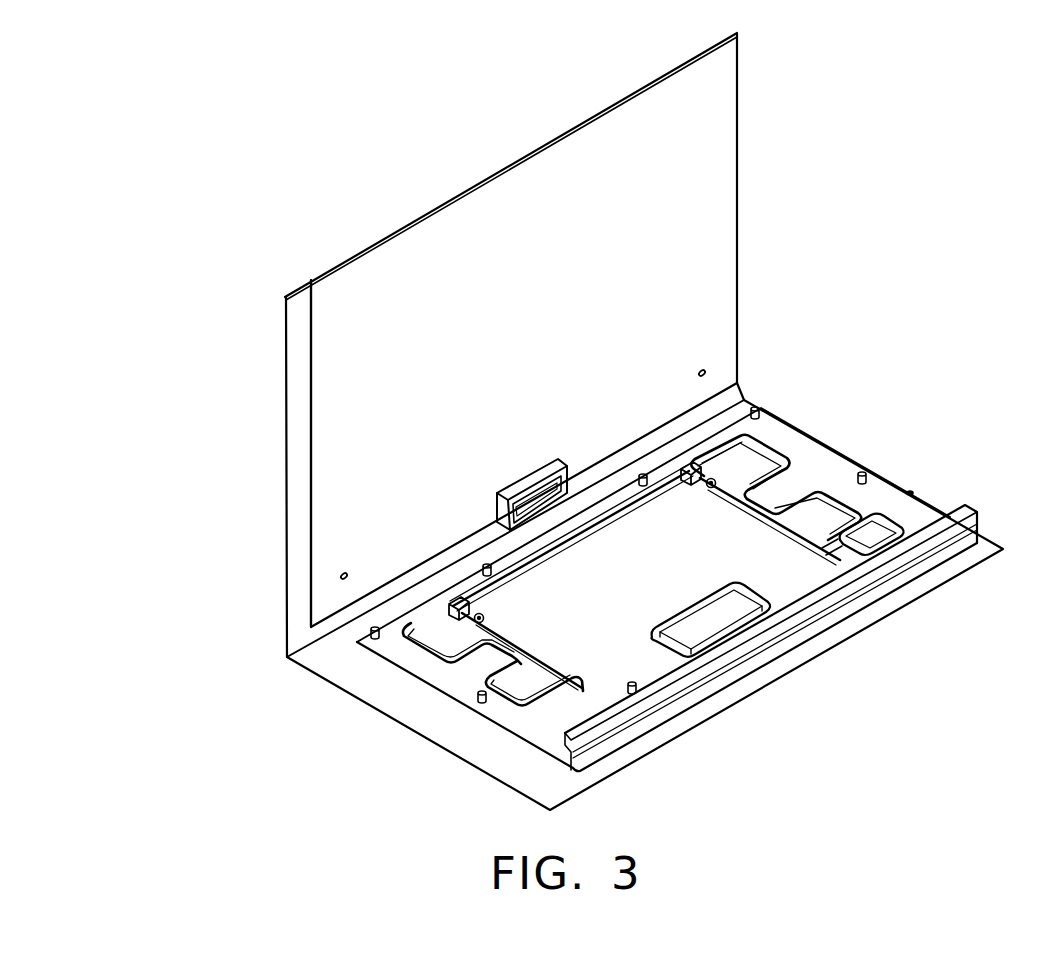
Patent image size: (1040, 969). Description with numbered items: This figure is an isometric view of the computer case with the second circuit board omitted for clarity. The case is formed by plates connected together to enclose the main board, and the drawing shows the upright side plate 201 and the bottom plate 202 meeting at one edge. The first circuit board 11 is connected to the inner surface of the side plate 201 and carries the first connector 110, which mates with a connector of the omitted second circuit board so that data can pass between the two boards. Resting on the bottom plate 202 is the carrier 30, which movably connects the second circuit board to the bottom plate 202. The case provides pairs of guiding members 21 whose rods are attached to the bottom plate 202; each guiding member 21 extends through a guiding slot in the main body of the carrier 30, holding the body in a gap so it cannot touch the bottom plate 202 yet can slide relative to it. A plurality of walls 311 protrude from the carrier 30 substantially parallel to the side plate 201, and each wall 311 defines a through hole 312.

The first circuit board 11 is at (702, 258).
The first connector 110 is at (510, 488).
The side plate 201 is at (298, 458).
The bottom plate 202 is at (342, 665).
The guiding member 21 is at (452, 604).
The carrier 30 is at (427, 687).
The wall 311 is at (868, 528).
The through hole 312 is at (805, 490).